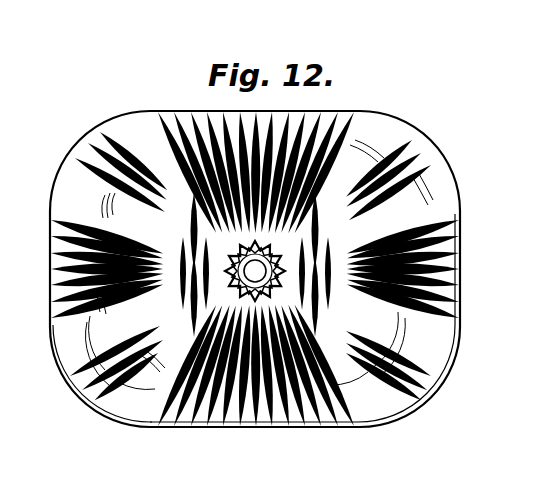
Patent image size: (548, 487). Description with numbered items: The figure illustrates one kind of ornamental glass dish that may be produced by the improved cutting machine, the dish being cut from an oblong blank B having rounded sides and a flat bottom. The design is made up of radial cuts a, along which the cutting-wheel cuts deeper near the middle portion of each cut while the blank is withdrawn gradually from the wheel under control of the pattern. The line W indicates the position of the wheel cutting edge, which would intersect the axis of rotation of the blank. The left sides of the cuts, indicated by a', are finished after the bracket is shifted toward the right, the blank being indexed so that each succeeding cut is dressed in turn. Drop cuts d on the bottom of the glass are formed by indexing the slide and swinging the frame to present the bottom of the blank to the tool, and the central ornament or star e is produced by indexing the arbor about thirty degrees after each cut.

The line indicating the wheel cutting edge W is at (260, 111).
The blank B is at (262, 269).
The radial cuts a is at (250, 273).
The left sides of the cuts a' is at (222, 248).
The drop cuts d is at (185, 242).
The ornament or star e is at (240, 258).